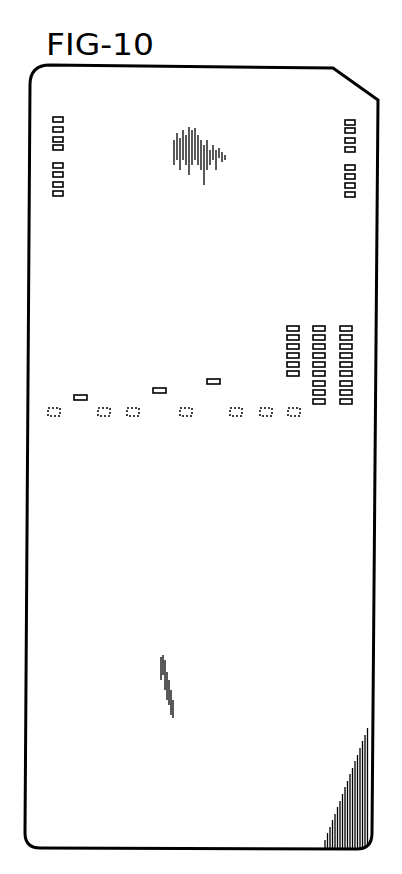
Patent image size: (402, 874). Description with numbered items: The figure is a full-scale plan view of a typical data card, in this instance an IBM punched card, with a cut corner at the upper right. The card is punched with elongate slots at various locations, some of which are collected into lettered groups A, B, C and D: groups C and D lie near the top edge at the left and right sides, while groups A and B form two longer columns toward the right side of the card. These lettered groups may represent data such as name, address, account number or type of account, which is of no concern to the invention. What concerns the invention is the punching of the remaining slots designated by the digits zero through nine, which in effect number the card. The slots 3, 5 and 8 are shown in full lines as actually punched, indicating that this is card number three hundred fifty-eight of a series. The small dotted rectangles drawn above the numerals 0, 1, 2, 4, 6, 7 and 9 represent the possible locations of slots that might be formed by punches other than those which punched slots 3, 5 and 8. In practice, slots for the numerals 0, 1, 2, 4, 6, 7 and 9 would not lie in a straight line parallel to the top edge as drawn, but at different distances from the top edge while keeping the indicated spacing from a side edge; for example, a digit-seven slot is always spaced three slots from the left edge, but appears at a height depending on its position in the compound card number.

The slot group A is at (346, 326).
The slot group B is at (319, 326).
The slot group C is at (350, 198).
The slot group D is at (58, 197).
The digit 0 slot location 0 is at (294, 417).
The digit 1 slot location 1 is at (266, 417).
The digit 2 slot location 2 is at (237, 417).
The punched slot 3 is at (211, 378).
The digit 4 slot location 4 is at (186, 417).
The punched slot 5 is at (158, 387).
The digit 6 slot location 6 is at (133, 417).
The digit 7 slot location 7 is at (105, 417).
The punched slot 8 is at (81, 394).
The digit 9 slot location 9 is at (55, 417).